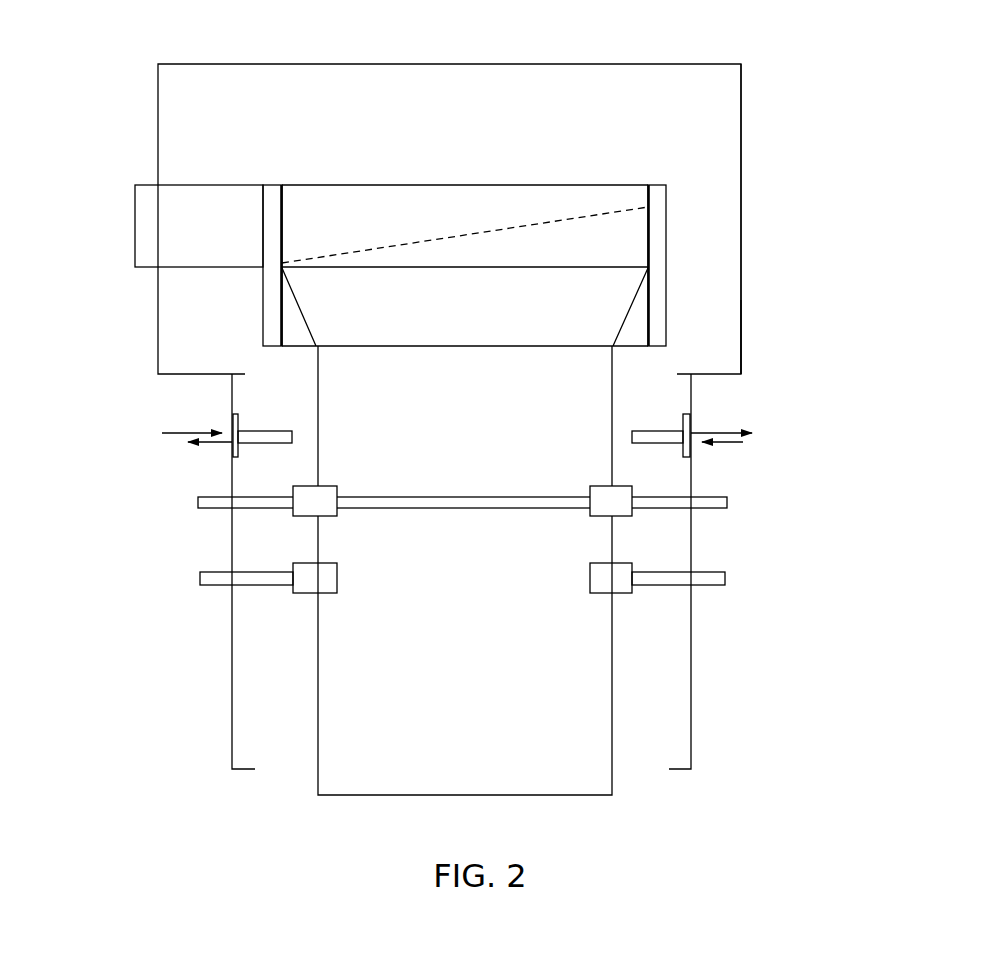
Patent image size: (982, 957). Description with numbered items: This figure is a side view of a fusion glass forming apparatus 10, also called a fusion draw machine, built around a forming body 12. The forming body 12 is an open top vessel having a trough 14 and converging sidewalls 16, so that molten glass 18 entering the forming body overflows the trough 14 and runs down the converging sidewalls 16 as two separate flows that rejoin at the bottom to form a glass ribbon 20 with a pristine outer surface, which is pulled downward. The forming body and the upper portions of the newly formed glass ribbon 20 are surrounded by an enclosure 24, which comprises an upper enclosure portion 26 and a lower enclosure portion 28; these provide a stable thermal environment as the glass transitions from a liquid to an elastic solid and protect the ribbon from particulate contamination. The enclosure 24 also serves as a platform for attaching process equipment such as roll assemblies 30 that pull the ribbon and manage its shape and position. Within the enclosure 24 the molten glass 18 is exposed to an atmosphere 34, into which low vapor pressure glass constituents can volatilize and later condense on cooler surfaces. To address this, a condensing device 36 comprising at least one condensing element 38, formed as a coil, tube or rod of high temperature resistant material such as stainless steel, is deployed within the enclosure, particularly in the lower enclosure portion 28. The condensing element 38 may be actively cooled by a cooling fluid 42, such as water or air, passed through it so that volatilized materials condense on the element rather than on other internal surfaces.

The fusion glass forming apparatus 10 is at (792, 114).
The forming body 12 is at (667, 228).
The trough 14 is at (501, 222).
The converging sidewalls 16 is at (605, 296).
The molten glass 18 is at (121, 228).
The glass ribbon 20 is at (306, 743).
The enclosure 24 is at (756, 265).
The upper enclosure portion 26 is at (741, 333).
The lower enclosure portion 28 is at (691, 707).
The roll assemblies 30 is at (247, 571).
The atmosphere 34 is at (377, 117).
The condensing device 36 is at (272, 412).
The condensing element 38 is at (260, 443).
The cooling fluid 42 is at (182, 432).